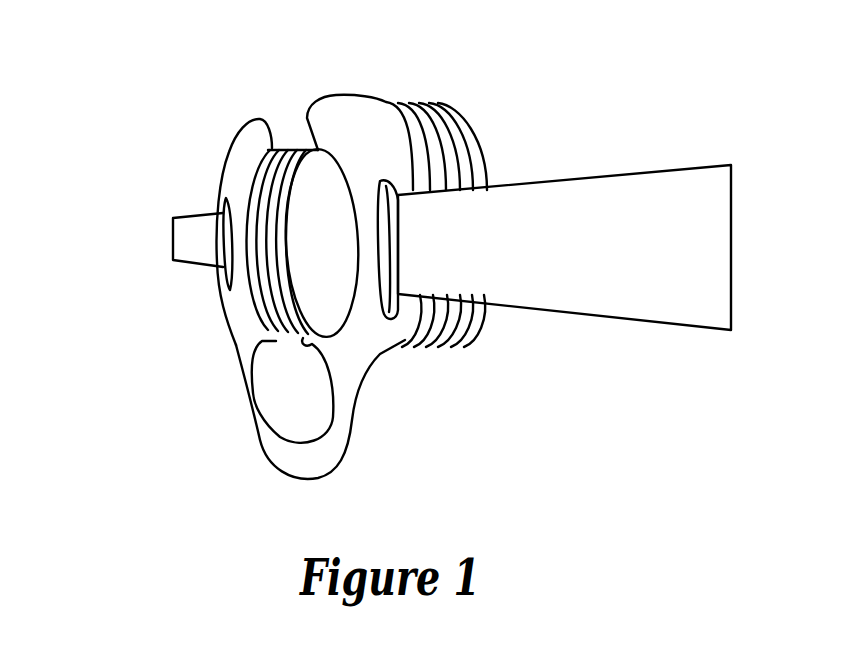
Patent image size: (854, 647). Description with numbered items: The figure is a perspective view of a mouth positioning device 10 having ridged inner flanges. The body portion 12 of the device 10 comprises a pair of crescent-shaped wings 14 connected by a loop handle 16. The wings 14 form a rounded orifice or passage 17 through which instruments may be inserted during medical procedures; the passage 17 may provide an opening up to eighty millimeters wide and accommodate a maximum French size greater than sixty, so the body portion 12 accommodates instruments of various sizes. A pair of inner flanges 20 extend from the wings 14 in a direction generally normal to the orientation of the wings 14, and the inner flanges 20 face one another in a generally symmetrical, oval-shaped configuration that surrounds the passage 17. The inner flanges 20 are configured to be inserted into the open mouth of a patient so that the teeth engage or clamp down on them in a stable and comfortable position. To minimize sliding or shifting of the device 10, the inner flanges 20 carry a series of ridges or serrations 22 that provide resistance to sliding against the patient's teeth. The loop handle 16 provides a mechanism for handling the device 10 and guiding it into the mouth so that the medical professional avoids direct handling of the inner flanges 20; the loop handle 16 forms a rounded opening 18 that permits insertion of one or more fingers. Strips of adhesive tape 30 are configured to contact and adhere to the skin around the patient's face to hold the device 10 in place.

The mouth positioning device 10 is at (246, 120).
The body portion 12 is at (347, 118).
The crescent-shaped wings 14 is at (230, 186).
The loop handle 16 is at (340, 432).
The passage 17 is at (318, 282).
The rounded opening 18 is at (310, 397).
The inner flanges 20 is at (300, 140).
The ridges or serrations 22 is at (275, 282).
The adhesive tape strips 30 is at (200, 240).